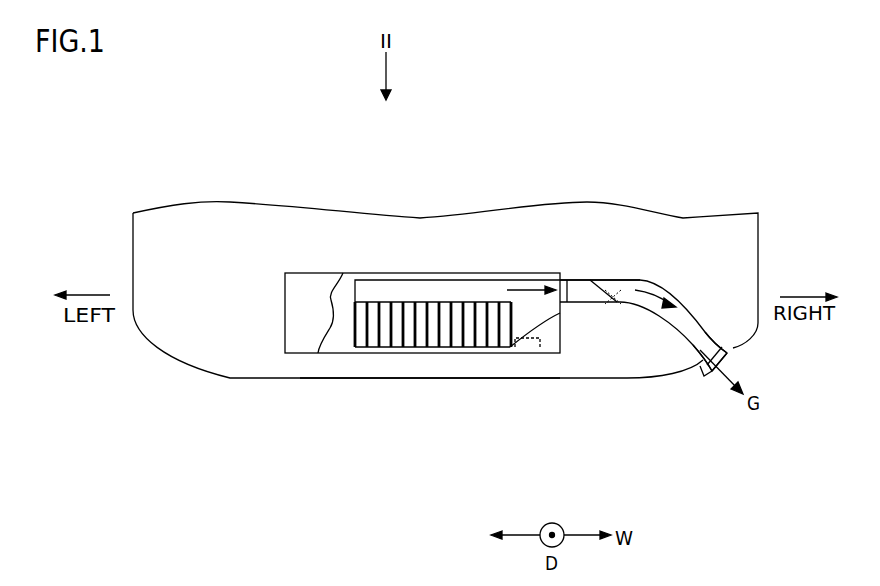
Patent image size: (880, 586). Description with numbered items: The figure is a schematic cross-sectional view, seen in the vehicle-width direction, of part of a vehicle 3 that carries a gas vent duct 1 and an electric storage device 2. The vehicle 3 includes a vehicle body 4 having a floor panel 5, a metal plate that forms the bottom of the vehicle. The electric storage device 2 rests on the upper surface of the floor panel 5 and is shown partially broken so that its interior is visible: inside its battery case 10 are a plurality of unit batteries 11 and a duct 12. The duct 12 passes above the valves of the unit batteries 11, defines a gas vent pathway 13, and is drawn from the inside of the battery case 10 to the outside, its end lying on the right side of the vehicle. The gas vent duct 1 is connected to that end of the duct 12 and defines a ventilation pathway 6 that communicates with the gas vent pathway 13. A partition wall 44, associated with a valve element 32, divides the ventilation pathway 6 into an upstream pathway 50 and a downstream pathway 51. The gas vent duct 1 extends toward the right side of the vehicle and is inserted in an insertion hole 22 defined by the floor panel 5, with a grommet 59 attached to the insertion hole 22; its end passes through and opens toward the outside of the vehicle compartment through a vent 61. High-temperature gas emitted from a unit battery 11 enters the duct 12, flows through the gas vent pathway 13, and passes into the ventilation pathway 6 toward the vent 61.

The gas vent duct 1 is at (644, 280).
The electric storage device 2 is at (487, 151).
The vehicle 3 is at (647, 121).
The vehicle body 4 is at (133, 238).
The floor panel 5 is at (415, 379).
The ventilation pathway 6 is at (640, 452).
The battery case 10 is at (413, 273).
The unit batteries 11 is at (443, 303).
The duct 12 is at (472, 280).
The gas vent pathway 13 is at (516, 276).
The insertion hole 22 is at (710, 374).
The valve element 32 is at (597, 220).
The partition wall 44 is at (599, 280).
The upstream pathway 50 is at (593, 303).
The downstream pathway 51 is at (627, 303).
The grommet 59 is at (729, 352).
The vent 61 is at (732, 372).